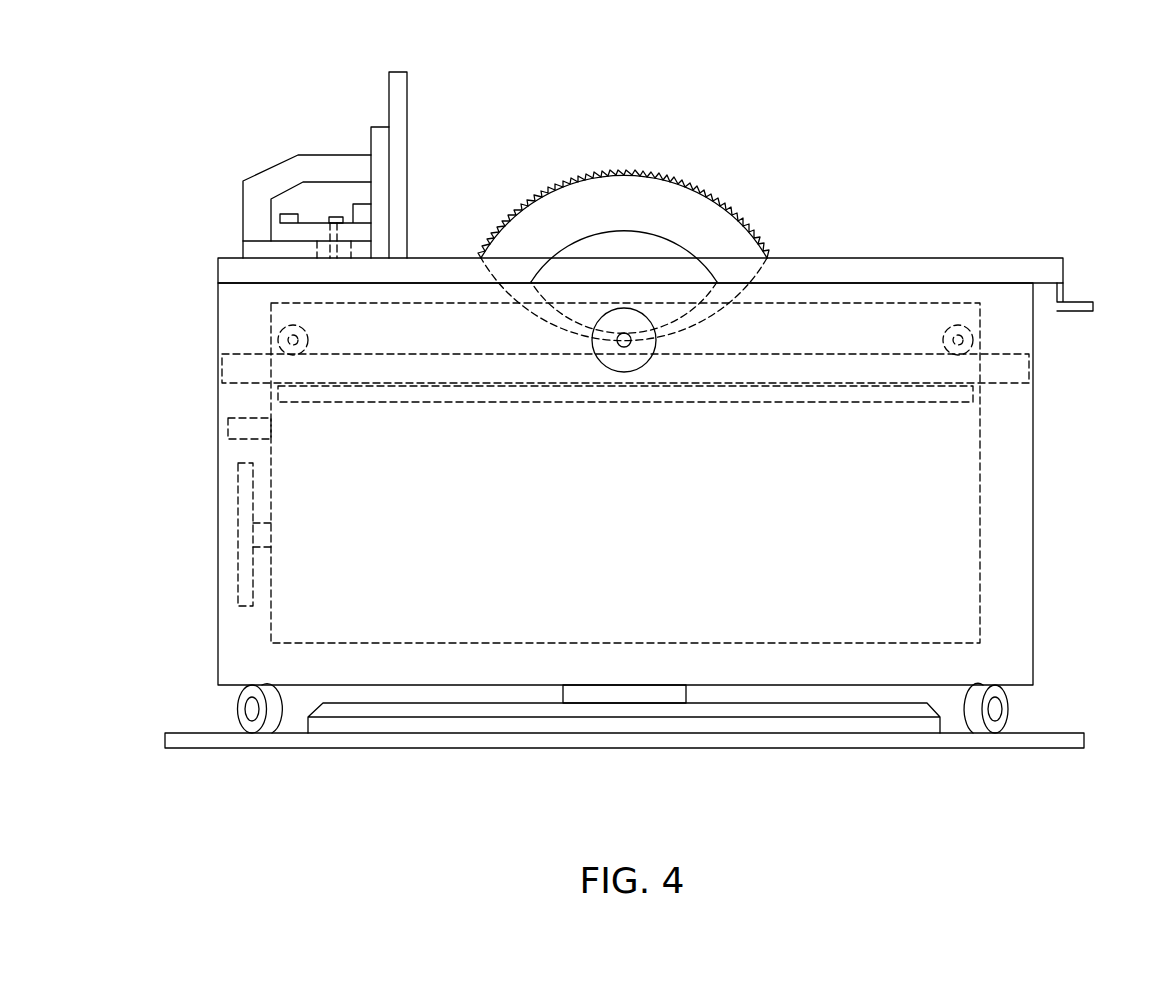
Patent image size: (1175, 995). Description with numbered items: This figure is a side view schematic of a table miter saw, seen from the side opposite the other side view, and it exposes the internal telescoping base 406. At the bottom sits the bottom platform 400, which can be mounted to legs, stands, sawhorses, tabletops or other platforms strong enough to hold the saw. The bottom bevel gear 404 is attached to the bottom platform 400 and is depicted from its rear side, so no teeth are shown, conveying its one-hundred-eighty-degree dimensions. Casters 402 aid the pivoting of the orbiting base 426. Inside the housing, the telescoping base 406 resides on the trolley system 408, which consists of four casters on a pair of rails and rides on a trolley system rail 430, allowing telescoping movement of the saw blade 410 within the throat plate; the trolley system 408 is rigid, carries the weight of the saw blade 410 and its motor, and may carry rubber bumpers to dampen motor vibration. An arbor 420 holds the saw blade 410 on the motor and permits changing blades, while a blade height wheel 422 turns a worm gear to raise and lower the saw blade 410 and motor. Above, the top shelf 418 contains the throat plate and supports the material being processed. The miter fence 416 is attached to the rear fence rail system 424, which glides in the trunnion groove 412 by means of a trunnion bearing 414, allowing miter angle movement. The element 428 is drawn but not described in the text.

The bottom platform 400 is at (315, 737).
The casters 402 is at (238, 709).
The bottom bevel gear 404 is at (506, 720).
The telescoping base 406 is at (604, 473).
The trolley system 408 is at (982, 347).
The saw blade 410 is at (623, 255).
The trunnion groove 412 is at (328, 247).
The trunnion bearing 414 is at (328, 218).
The miter fence 416 is at (400, 105).
The top shelf 418 is at (897, 266).
The arbor 420 is at (637, 348).
The blade height wheel 422 is at (250, 509).
The rear fence rail system 424 is at (1013, 533).
The orbiting base 426 is at (638, 693).
The blade guard mount 428 is at (333, 165).
The trolley system rail 430 is at (232, 368).